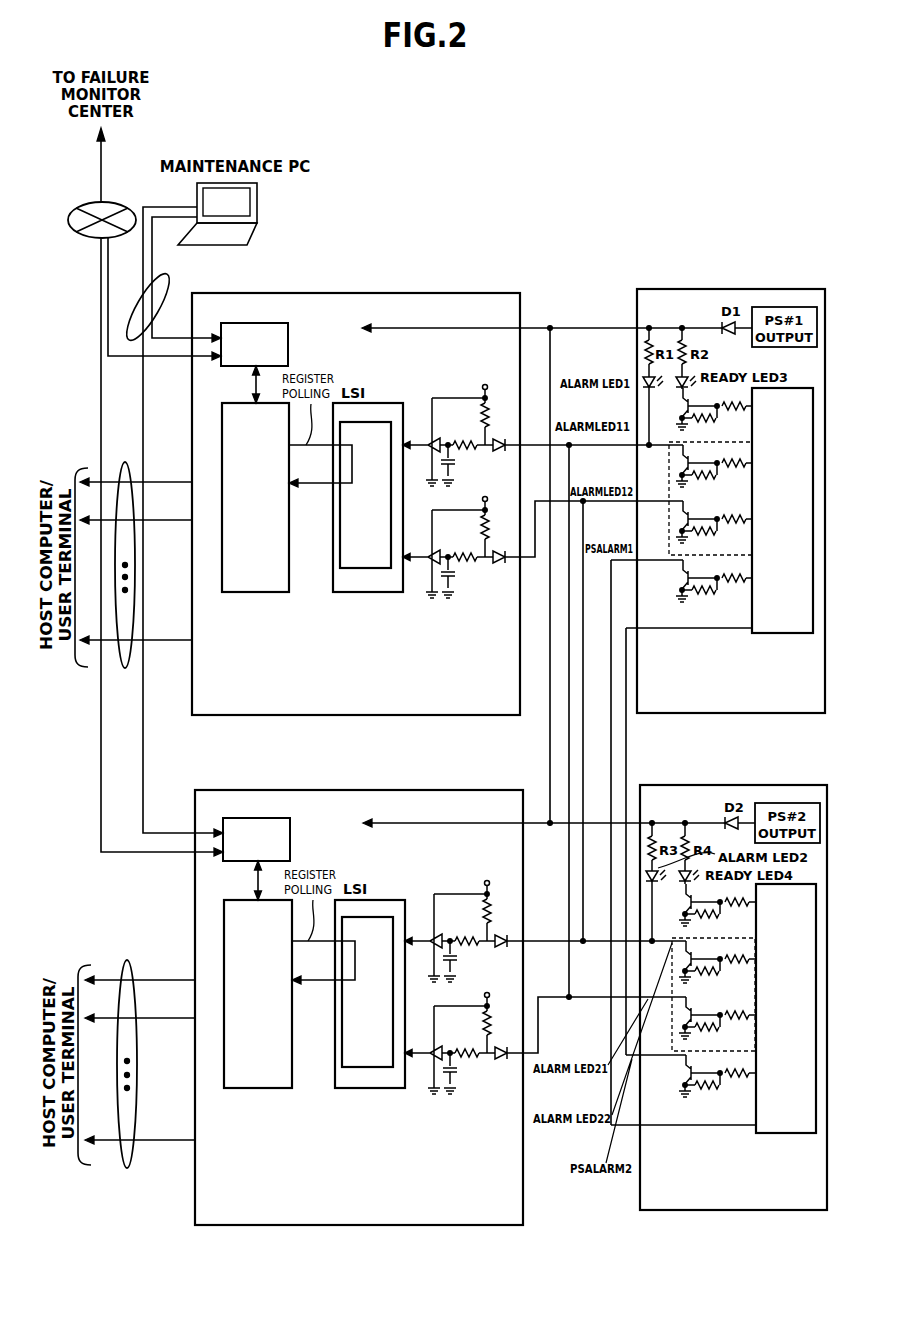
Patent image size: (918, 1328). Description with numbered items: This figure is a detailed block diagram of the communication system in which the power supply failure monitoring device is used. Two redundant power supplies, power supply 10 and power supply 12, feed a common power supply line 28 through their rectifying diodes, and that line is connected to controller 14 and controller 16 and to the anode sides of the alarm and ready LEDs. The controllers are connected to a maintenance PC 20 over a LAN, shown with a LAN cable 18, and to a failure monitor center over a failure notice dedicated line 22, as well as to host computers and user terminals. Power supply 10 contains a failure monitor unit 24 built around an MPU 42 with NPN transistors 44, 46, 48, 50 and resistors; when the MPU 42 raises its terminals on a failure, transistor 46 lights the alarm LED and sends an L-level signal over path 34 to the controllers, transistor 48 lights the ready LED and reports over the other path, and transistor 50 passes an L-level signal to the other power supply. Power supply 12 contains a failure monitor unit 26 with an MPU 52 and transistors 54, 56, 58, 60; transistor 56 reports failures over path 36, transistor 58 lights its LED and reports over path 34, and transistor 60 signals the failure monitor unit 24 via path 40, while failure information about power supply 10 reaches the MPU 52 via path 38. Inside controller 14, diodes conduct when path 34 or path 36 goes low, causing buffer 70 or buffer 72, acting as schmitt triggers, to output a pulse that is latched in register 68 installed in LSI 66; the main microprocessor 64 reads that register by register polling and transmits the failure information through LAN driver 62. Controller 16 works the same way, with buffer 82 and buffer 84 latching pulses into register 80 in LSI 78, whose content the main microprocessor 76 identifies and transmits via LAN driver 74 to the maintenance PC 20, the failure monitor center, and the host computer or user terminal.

The power supply #1 10 is at (756, 289).
The power supply #2 12 is at (759, 785).
The controller #1 14 is at (441, 293).
The controller #2 16 is at (444, 790).
The maintenance LAN cable 18 is at (170, 284).
The maintenance PC 20 is at (258, 203).
The failure notice dedicated line 22 is at (85, 238).
The failure monitor unit 24 is at (722, 658).
The failure monitor unit 26 is at (724, 1154).
The power supply line 28 is at (549, 327).
The path 34 is at (568, 728).
The path 36 is at (583, 748).
The path 38 is at (611, 733).
The path 40 is at (626, 757).
The MPU 42 is at (790, 633).
The NPN transistor 44 is at (683, 400).
The NPN transistor 46 is at (680, 468).
The NPN transistor 48 is at (680, 524).
The NPN transistor 50 is at (680, 581).
The MPU 52 is at (795, 1133).
The NPN transistor 54 is at (687, 902).
The NPN transistor 56 is at (684, 964).
The NPN transistor 58 is at (684, 1020).
The NPN transistor 60 is at (684, 1072).
The LAN driver 62 is at (289, 346).
The main microprocessor 64 is at (254, 592).
The LSI 66 is at (378, 403).
The register 68 is at (370, 568).
The buffer 70 is at (431, 442).
The buffer 72 is at (431, 554).
The LAN driver 74 is at (291, 841).
The main microprocessor 76 is at (256, 1088).
The LSI 78 is at (380, 900).
The register 80 is at (372, 1067).
The buffer 82 is at (433, 938).
The buffer 84 is at (433, 1050).